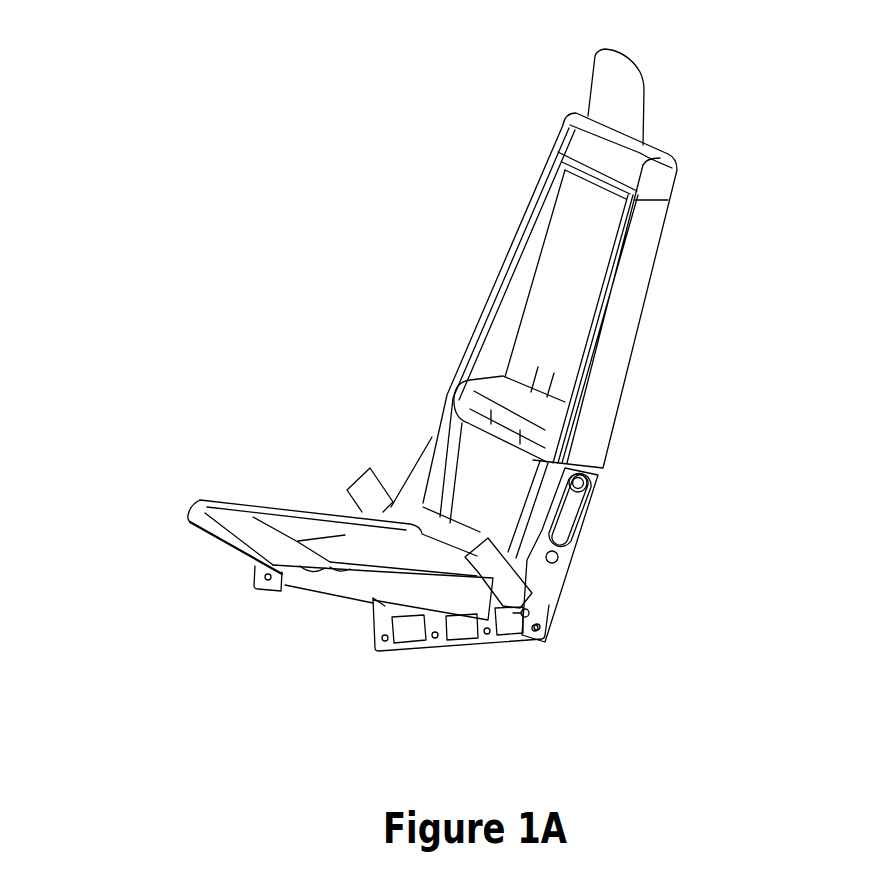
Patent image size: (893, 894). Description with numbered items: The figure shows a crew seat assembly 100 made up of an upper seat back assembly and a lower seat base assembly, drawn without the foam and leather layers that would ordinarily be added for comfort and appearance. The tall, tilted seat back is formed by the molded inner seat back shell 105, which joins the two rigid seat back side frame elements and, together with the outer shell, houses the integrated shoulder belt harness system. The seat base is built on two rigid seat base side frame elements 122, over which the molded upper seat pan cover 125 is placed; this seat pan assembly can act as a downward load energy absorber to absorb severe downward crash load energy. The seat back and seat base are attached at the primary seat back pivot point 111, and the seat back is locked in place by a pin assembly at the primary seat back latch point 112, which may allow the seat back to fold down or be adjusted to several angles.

The crew seat assembly 100 is at (137, 35).
The molded inner seat back shell 105 is at (493, 267).
The molded upper seat pan cover 125 is at (283, 493).
The rigid seat base side frame elements 122 is at (250, 592).
The primary seat back pivot point 111 is at (592, 485).
The primary seat back latch point 112 is at (567, 560).